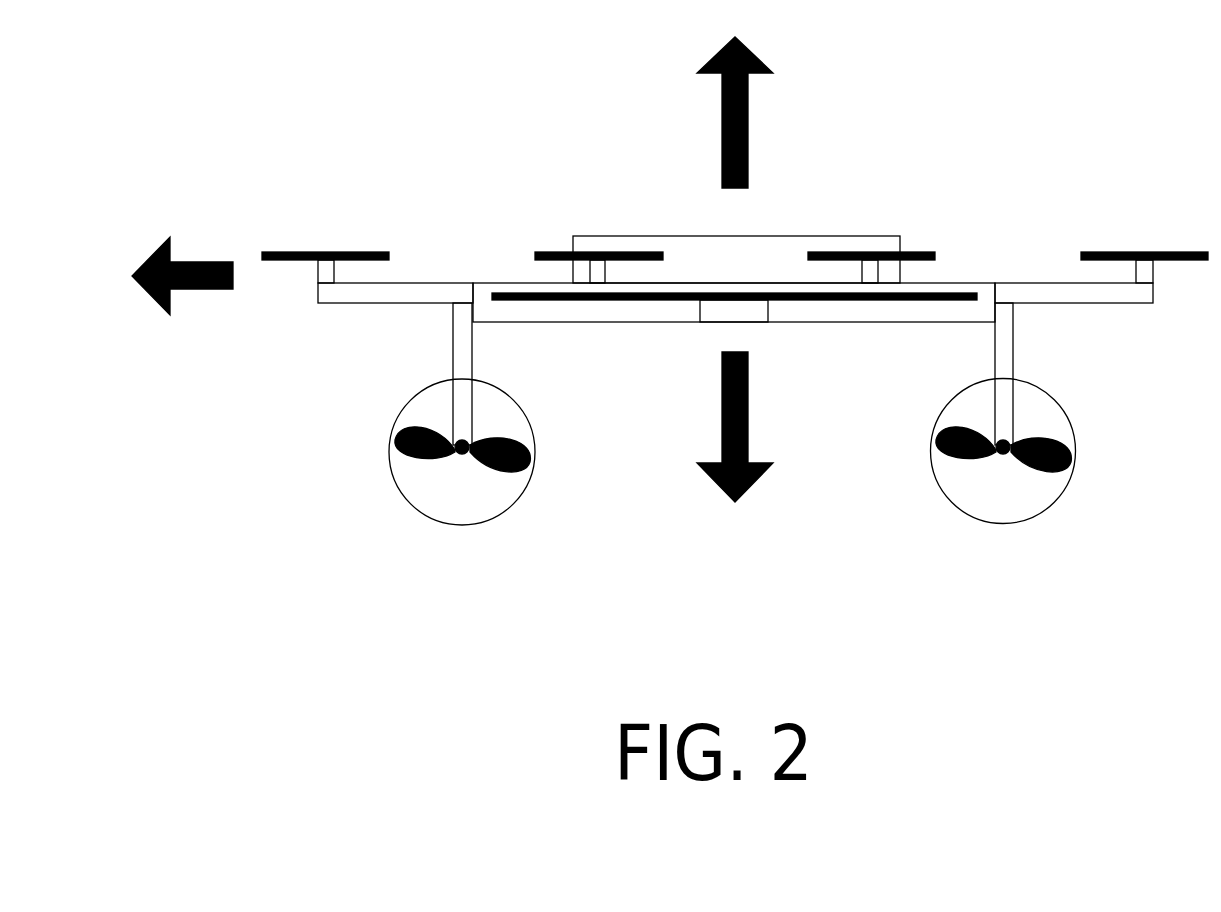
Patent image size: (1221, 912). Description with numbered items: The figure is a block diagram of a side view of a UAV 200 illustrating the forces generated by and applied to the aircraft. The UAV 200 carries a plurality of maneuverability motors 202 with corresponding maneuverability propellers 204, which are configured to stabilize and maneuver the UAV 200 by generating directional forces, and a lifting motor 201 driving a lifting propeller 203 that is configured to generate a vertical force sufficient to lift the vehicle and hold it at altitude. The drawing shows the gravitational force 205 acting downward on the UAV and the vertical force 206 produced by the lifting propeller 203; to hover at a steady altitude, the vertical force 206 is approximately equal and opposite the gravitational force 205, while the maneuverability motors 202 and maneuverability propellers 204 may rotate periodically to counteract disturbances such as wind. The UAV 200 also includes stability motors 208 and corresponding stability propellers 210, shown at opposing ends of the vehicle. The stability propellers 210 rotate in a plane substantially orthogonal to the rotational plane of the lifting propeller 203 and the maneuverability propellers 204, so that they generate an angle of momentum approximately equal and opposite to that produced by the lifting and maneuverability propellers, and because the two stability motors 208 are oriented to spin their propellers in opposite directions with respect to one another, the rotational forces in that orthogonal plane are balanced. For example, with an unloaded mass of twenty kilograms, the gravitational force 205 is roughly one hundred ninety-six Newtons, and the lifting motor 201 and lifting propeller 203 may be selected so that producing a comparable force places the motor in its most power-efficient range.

The UAV 200 is at (973, 76).
The lifting motor 201 is at (757, 310).
The maneuverability motors 202 is at (325, 270).
The lifting propeller 203 is at (868, 300).
The maneuverability propellers 204 is at (362, 252).
The gravitational force 205 is at (752, 490).
The vertical force 206 is at (752, 55).
The stability motors 208 is at (207, 262).
The stability propellers 210 is at (520, 470).